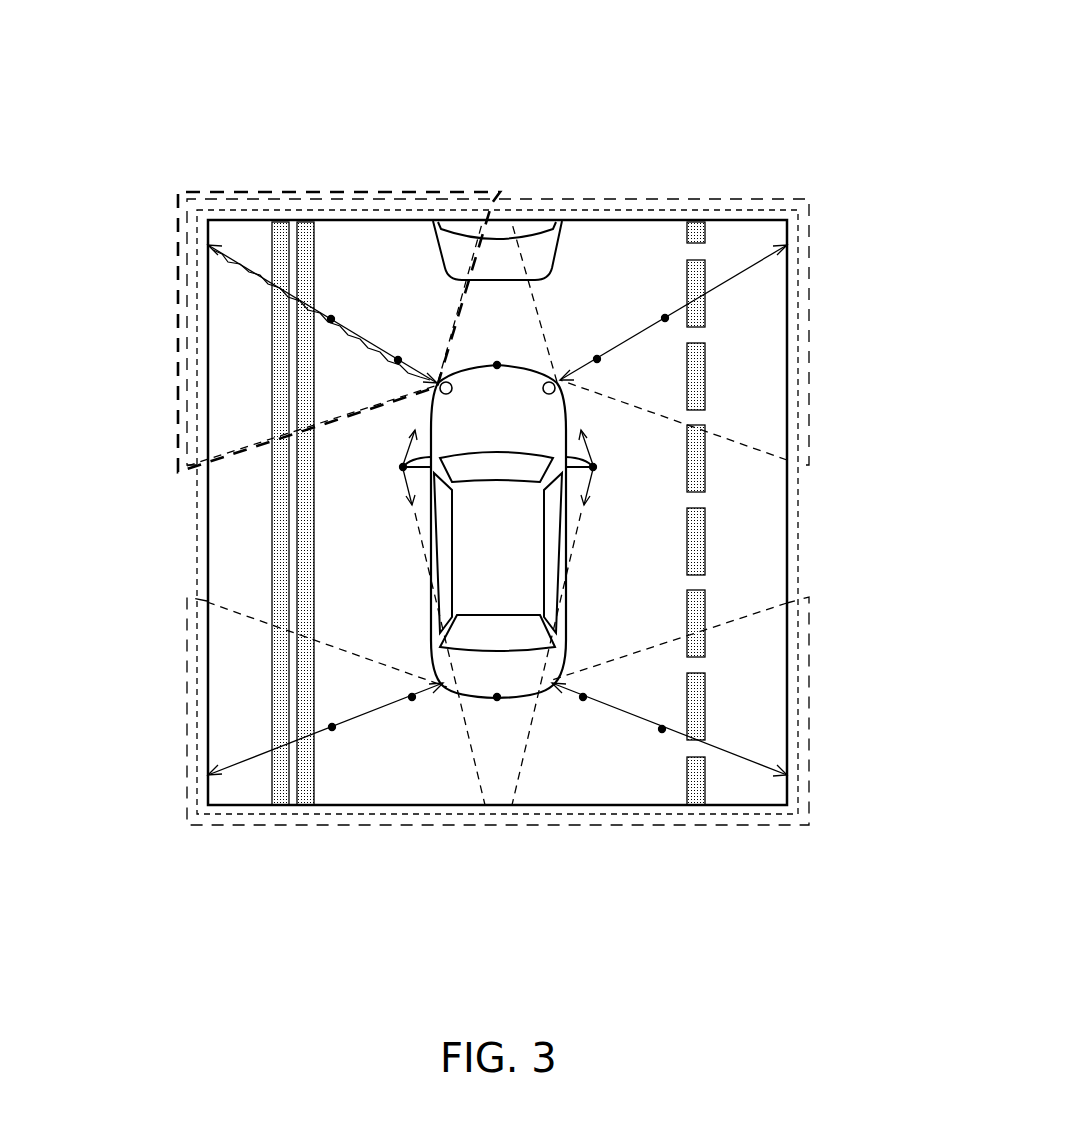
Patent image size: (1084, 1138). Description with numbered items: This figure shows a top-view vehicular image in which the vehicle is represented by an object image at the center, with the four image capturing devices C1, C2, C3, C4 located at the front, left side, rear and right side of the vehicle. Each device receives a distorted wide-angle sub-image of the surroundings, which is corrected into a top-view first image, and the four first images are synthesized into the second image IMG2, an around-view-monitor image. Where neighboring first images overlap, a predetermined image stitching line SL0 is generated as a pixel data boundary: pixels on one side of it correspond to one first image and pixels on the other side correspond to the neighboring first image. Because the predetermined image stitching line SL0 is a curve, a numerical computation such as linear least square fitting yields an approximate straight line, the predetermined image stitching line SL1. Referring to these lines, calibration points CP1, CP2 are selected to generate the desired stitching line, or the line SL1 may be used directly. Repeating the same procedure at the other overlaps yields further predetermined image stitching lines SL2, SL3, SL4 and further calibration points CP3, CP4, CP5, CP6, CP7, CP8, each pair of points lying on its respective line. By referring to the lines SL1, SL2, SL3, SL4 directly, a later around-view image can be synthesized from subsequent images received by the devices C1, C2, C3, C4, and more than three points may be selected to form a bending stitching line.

The second image IMG2 is at (790, 297).
The predetermined image stitching line SL0 is at (257, 280).
The predetermined image stitching line SL1 is at (362, 340).
The predetermined image stitching line SL2 is at (374, 720).
The predetermined image stitching line SL3 is at (624, 717).
The predetermined image stitching line SL4 is at (633, 340).
The calibration point CP1 is at (343, 305).
The calibration point CP2 is at (381, 376).
The calibration point CP3 is at (340, 712).
The calibration point CP4 is at (420, 715).
The calibration point CP5 is at (578, 715).
The calibration point CP6 is at (658, 713).
The calibration point CP7 is at (585, 346).
The calibration point CP8 is at (651, 305).
The image capturing device C1 is at (496, 354).
The image capturing device C2 is at (393, 467).
The image capturing device C3 is at (499, 715).
The image capturing device C4 is at (604, 467).